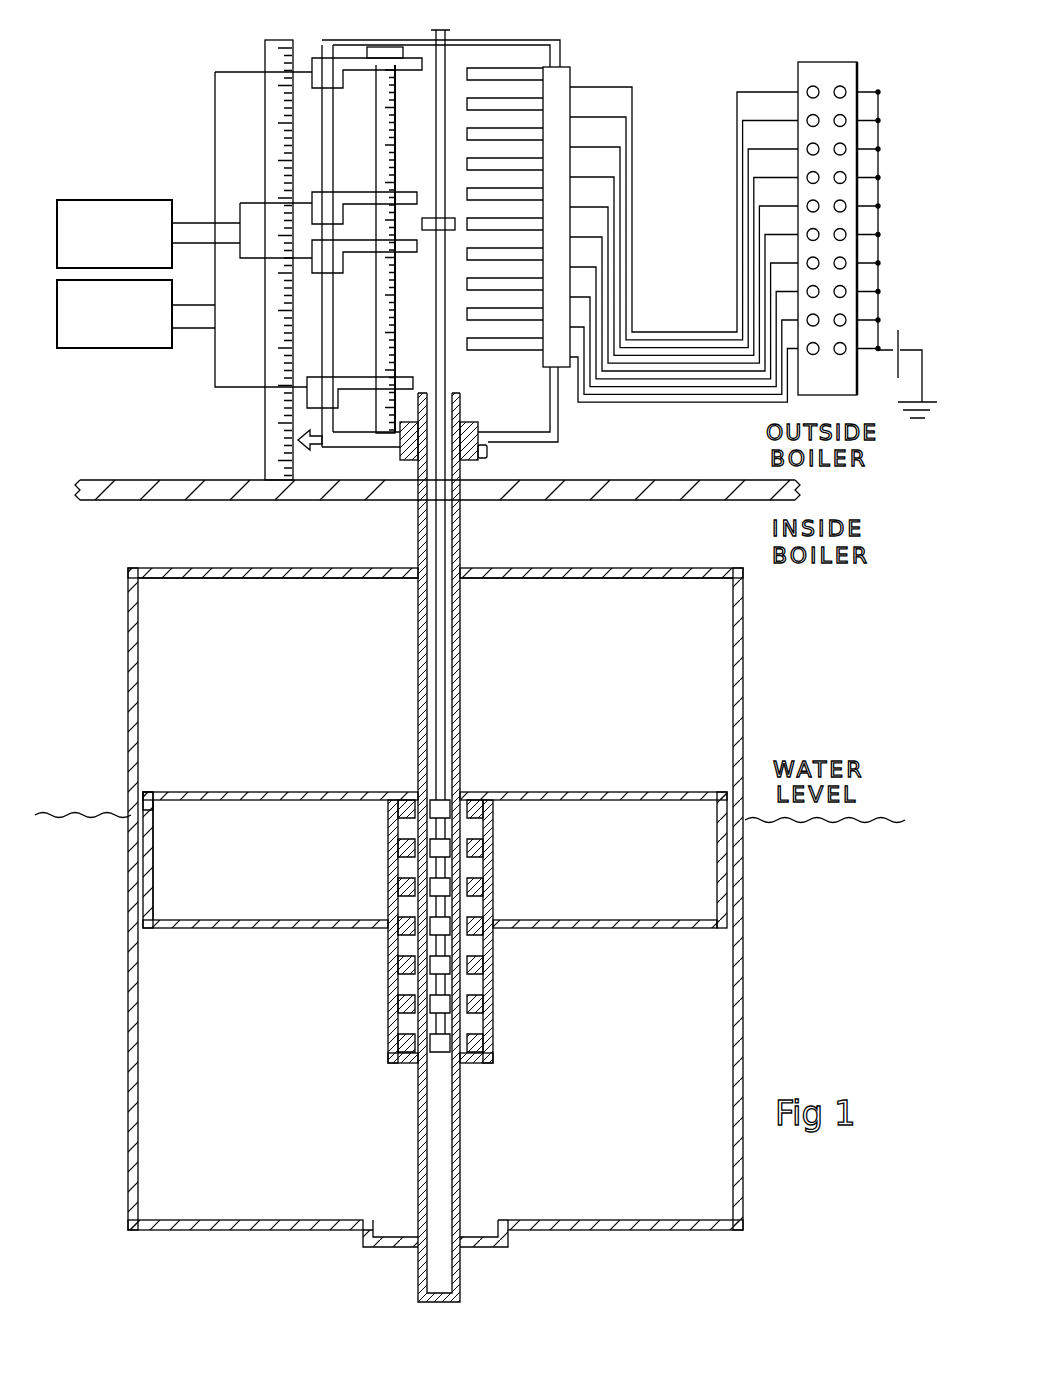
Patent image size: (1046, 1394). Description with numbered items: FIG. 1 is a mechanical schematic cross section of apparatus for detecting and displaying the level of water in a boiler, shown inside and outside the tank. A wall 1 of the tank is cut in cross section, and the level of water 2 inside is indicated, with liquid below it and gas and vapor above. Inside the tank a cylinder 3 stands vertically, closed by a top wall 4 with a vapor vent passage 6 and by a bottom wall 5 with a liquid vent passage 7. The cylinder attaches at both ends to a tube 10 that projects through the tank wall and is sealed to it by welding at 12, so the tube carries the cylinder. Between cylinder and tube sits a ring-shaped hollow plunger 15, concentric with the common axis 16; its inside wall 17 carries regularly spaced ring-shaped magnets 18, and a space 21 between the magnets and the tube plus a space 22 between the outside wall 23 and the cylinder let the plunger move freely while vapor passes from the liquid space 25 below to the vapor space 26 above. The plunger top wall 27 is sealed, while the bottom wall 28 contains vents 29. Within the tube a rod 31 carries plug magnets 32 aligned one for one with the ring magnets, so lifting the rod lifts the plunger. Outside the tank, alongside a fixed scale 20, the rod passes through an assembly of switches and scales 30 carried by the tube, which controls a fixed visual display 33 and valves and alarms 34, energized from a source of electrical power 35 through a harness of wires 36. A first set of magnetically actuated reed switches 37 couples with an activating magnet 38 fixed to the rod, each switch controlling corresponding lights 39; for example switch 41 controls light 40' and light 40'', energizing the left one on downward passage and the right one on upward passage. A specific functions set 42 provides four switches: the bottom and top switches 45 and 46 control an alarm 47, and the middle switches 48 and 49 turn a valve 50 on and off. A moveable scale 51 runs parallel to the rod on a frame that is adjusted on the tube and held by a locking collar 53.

The wall 1 is at (690, 482).
The level of water 2 is at (65, 812).
The cylinder 3 is at (127, 676).
The top wall 4 is at (200, 566).
The bottom wall 5 is at (242, 1218).
The vapor vent passage 6 is at (598, 583).
The liquid vent passage 7 is at (389, 1226).
The tube 10 is at (462, 708).
The seal 12 is at (462, 506).
The hollow plunger 15 is at (256, 792).
The common axis 16 is at (448, 1121).
The inside wall 17 is at (382, 862).
The ring-shaped magnets 18 is at (400, 792).
The fixed scale 20 is at (262, 440).
The space 21 is at (468, 788).
The space 22 is at (142, 788).
The outside wall 23 is at (151, 860).
The liquid space 25 is at (251, 1083).
The vapor space 26 is at (620, 693).
The top wall 27 is at (295, 790).
The bottom wall 28 is at (325, 929).
The vents 29 is at (237, 932).
The assembly of switches and scales 30 is at (582, 414).
The rod 31 is at (455, 669).
The plug magnets 32 is at (470, 976).
The fixed visual display 33 is at (736, 150).
The valves and alarms 34 is at (188, 188).
The source of electrical power 35 is at (900, 326).
The harness of wires 36 is at (632, 278).
The magnetically actuated reed switches 37 is at (577, 62).
The activating magnet 38 is at (432, 217).
The lights 39 is at (818, 75).
The light 40' is at (754, 220).
The light 40'' is at (883, 220).
The switch 41 is at (560, 226).
The specific functions set 42 is at (304, 38).
The switch 45 is at (358, 378).
The switch 46 is at (341, 80).
The alarm 47 is at (147, 349).
The switch 48 is at (341, 272).
The switch 49 is at (345, 194).
The valve 50 is at (101, 199).
The moveable scale 51 is at (395, 279).
The locking collar 53 is at (488, 456).